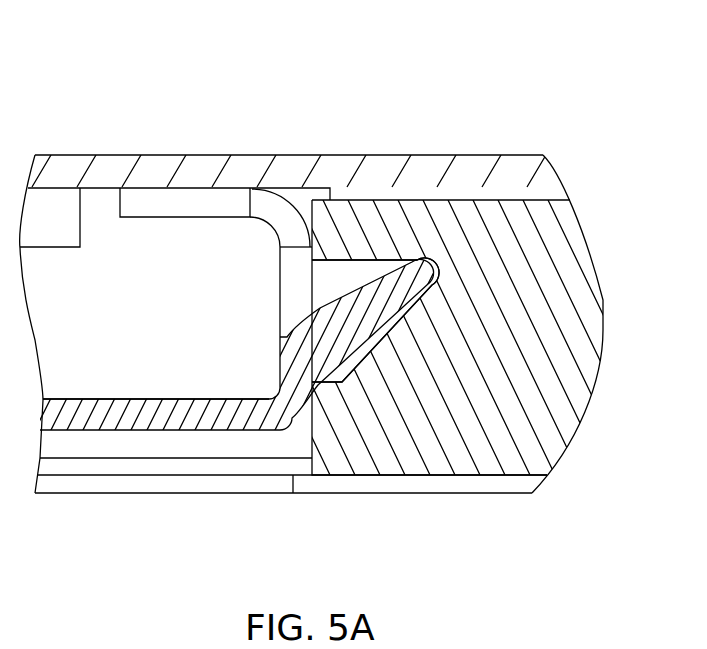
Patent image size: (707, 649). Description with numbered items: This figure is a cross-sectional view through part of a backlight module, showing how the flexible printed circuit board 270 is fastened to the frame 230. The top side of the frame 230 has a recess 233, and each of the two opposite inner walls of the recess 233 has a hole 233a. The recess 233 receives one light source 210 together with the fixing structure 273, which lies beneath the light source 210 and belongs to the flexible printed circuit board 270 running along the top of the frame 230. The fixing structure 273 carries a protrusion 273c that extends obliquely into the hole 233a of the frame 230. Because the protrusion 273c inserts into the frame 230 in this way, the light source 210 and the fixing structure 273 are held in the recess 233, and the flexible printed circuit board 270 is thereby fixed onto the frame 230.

The light source 210 is at (58, 198).
The frame 230 is at (572, 283).
The recess 233 is at (186, 241).
The hole 233a is at (337, 289).
The flexible printed circuit board 270 is at (525, 153).
The fixing structure 273 is at (117, 447).
The protrusion 273c is at (410, 278).